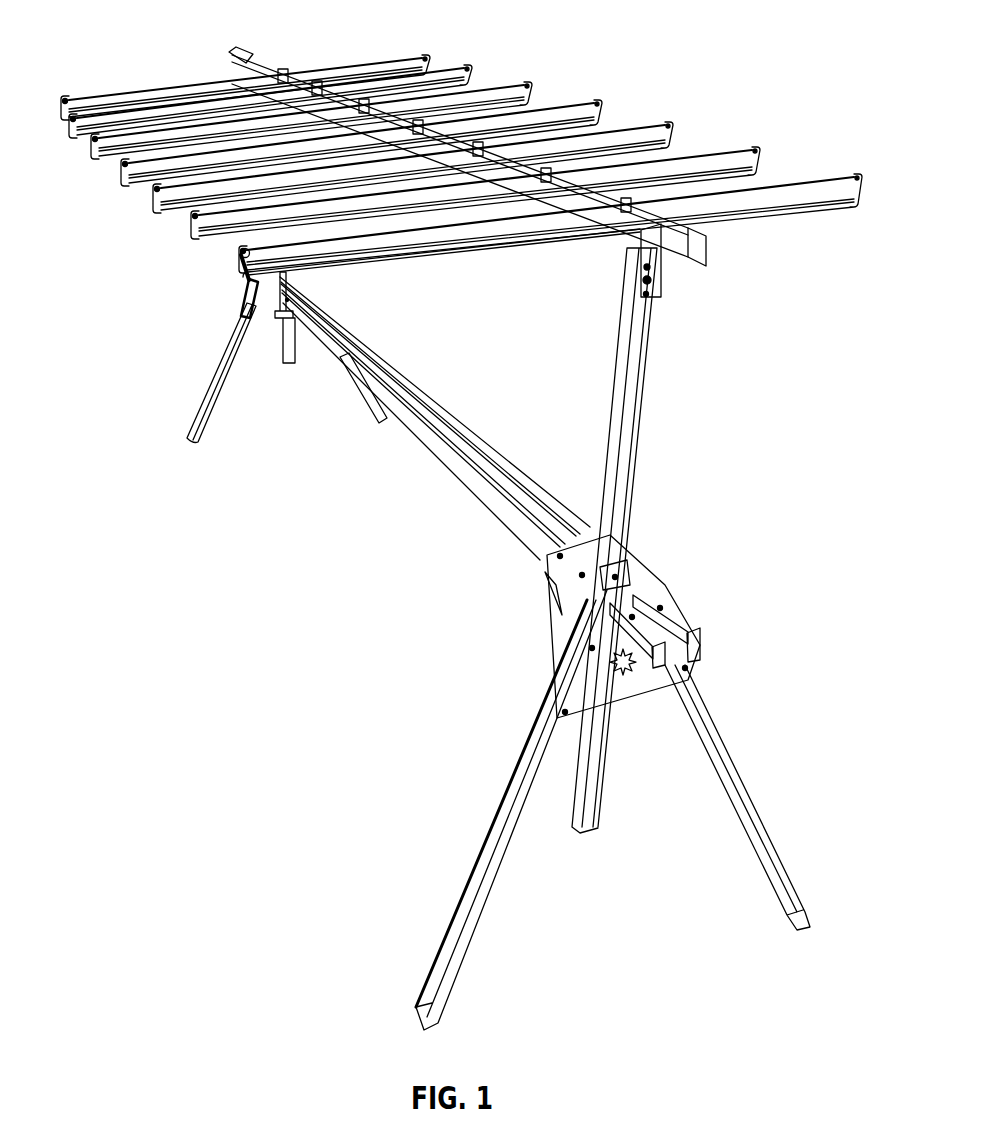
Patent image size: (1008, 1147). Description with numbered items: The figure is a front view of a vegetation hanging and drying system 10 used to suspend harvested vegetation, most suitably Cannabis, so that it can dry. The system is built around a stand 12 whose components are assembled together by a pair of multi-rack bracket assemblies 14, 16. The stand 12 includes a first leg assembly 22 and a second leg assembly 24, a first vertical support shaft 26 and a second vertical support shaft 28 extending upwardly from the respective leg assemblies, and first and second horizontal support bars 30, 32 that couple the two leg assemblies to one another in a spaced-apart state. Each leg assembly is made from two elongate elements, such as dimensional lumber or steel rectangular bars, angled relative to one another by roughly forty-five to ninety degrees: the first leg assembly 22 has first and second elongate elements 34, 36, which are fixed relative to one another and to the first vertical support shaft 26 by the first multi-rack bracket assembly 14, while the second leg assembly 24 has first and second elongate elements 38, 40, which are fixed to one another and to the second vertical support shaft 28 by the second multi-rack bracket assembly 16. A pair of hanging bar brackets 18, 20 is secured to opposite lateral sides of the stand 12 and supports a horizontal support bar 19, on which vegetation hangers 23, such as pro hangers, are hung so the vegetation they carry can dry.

The vegetation hanging and drying system 10 is at (640, 66).
The stand 12 is at (747, 605).
The first multi-rack bracket assembly 14 is at (245, 302).
The second multi-rack bracket assembly 16 is at (652, 571).
The hanging bar bracket 18 is at (232, 58).
The horizontal support bar 19 is at (503, 168).
The hanging bar bracket 20 is at (654, 258).
The first leg assembly 22 is at (208, 354).
The vegetation hangers 23 is at (796, 194).
The second leg assembly 24 is at (764, 784).
The first vertical support shaft 26 is at (250, 205).
The second vertical support shaft 28 is at (630, 420).
The first horizontal support bar 30 is at (438, 452).
The second horizontal support bar 32 is at (484, 436).
The first elongate element 34 is at (200, 414).
The second elongate element 36 is at (355, 390).
The first elongate element 38 is at (501, 818).
The second elongate element 40 is at (779, 870).